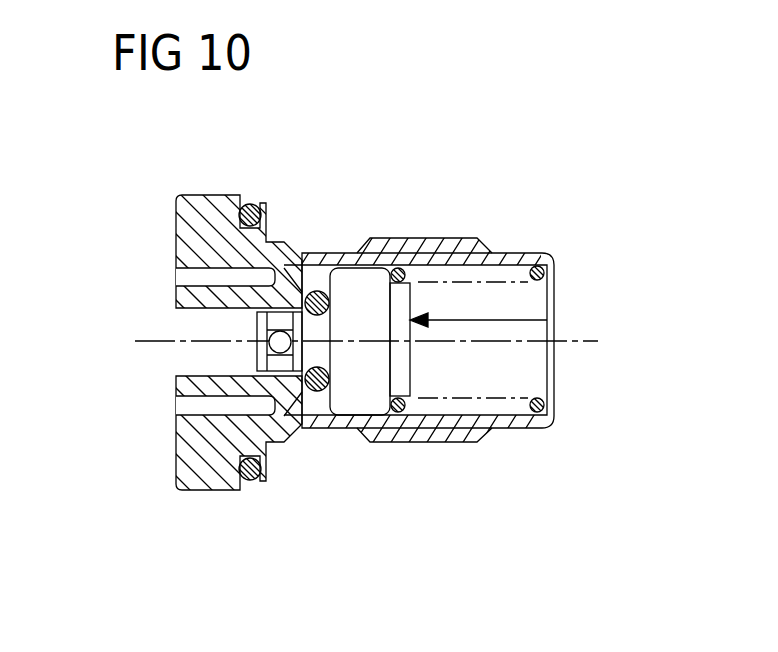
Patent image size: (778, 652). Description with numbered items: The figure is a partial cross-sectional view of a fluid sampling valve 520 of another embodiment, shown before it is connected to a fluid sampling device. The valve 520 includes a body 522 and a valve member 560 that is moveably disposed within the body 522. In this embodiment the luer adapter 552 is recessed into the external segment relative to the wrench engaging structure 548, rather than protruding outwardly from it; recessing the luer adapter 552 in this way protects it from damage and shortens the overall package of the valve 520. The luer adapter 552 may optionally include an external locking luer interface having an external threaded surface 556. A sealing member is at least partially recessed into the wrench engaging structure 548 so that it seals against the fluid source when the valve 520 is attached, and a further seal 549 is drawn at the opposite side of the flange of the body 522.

The valve 520 is at (136, 166).
The body 522 is at (238, 178).
The wrench engaging structure 548 is at (258, 213).
The O-ring seal 549 is at (205, 490).
The luer adapter 552 is at (176, 272).
The external threaded surface 556 is at (176, 412).
The valve member 560 is at (548, 318).